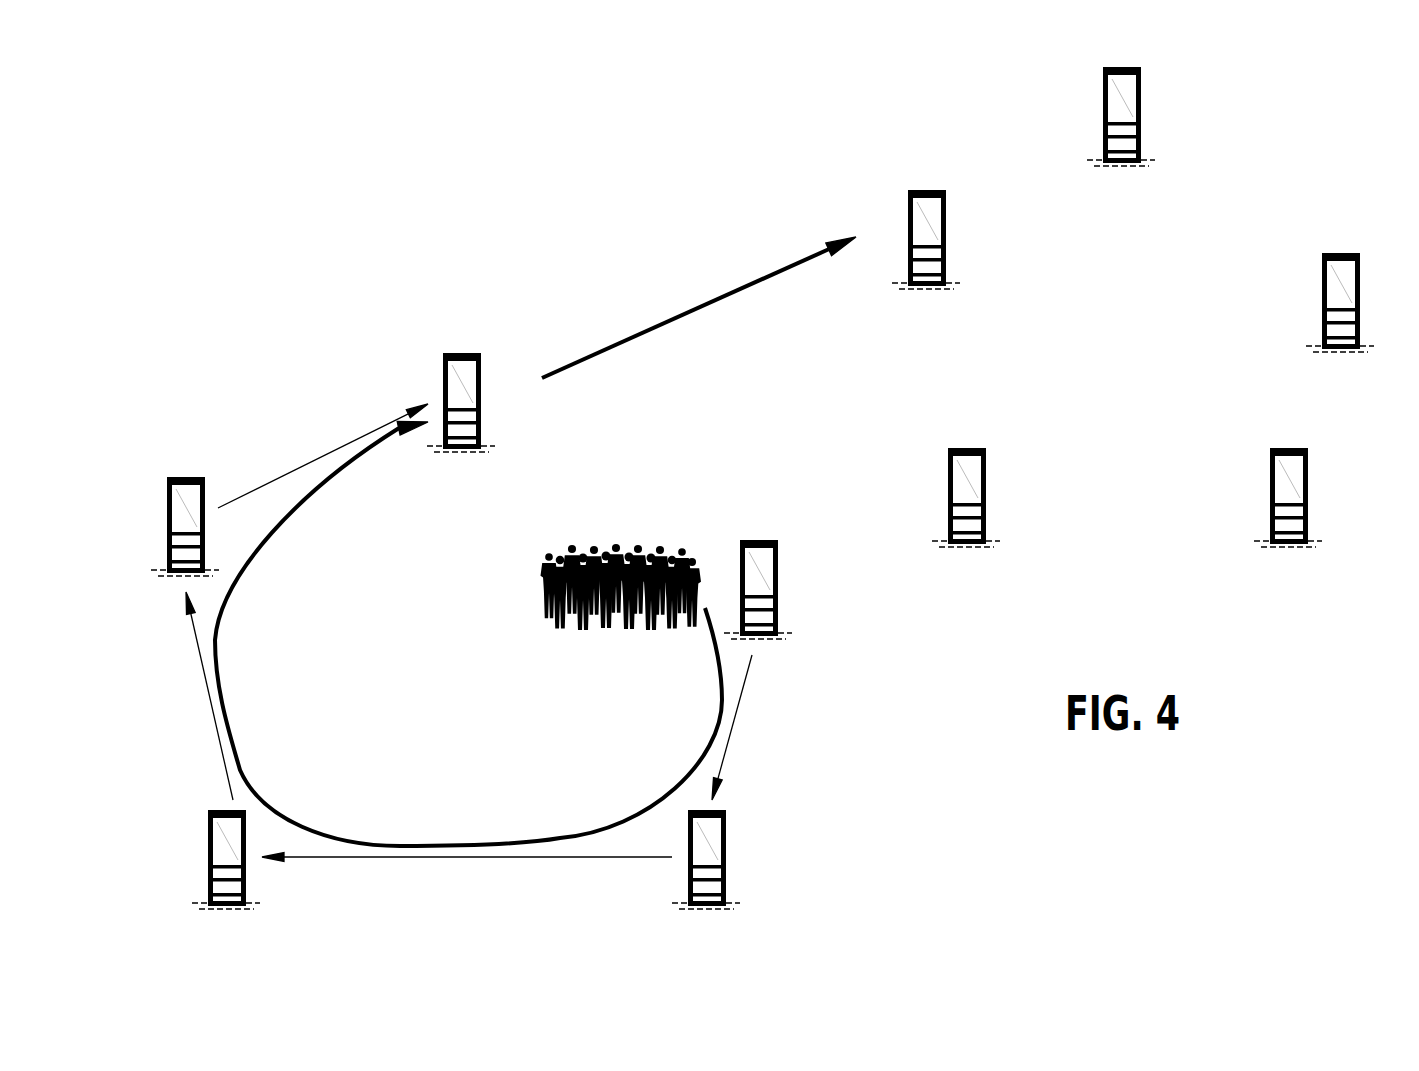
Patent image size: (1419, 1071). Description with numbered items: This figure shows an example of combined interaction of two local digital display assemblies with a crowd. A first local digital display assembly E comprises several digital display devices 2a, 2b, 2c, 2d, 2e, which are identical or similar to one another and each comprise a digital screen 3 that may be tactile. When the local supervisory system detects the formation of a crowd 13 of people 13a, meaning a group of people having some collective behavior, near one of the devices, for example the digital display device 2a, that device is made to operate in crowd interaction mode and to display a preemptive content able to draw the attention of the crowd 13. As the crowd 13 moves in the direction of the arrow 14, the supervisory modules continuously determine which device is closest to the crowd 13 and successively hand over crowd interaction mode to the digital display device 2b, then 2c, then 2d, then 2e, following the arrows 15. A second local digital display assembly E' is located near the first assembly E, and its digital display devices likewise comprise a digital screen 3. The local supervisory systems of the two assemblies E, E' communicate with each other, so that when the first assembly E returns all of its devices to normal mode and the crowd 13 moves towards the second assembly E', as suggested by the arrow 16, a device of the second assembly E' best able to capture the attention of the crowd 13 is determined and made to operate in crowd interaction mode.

The digital screen 3 is at (466, 373).
The digital display device 2a is at (760, 635).
The digital display device 2b is at (710, 905).
The digital display device 2c is at (214, 905).
The digital display device 2d is at (172, 572).
The digital display device 2e is at (449, 448).
The crowd 13 is at (649, 519).
The people 13a is at (687, 563).
The arrow 14 is at (318, 820).
The arrows 15 is at (320, 455).
The transfer of information to remote environment 16 is at (695, 305).
The local digital display assembly E is at (317, 306).
The local digital display assembly E' is at (1361, 109).